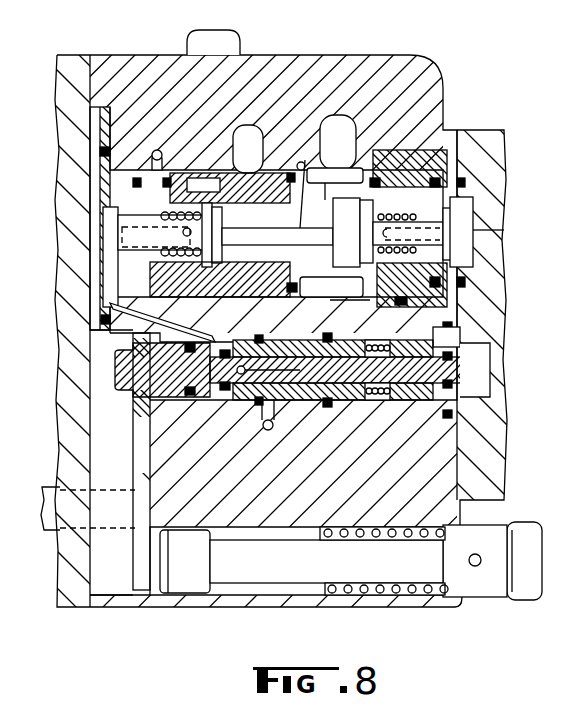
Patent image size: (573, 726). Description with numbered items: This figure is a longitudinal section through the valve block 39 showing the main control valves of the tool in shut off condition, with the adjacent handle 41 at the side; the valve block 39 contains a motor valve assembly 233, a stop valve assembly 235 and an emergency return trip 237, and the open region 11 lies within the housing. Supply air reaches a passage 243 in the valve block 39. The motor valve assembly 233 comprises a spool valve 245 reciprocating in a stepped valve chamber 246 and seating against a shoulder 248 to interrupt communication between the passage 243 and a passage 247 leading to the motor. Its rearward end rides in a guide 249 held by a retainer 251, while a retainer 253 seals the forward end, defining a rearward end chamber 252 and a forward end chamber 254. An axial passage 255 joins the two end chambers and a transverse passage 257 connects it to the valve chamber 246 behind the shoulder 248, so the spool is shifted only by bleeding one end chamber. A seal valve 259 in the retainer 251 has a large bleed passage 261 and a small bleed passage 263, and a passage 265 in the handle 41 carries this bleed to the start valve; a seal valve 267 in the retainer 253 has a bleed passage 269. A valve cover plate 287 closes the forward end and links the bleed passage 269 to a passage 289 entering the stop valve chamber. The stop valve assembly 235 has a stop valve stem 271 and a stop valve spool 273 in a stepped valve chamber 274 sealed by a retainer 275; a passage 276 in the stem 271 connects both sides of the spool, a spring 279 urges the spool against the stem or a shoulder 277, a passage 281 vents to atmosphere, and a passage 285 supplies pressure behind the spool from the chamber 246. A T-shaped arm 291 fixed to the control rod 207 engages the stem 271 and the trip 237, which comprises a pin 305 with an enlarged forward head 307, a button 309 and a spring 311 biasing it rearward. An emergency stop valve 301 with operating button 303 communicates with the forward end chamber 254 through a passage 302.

The cavity 11 is at (86, 350).
The valve block 39 is at (288, 55).
The handle 41 is at (508, 430).
The control rod 207 is at (55, 500).
The motor valve assembly 233 is at (470, 170).
The stop valve assembly 235 is at (488, 372).
The emergency return trip 237 is at (556, 516).
The passage 243 is at (335, 125).
The spool valve 245 is at (200, 168).
The valve chamber 246 is at (328, 170).
The passage 247 is at (248, 140).
The shoulder 248 is at (297, 163).
The guide 249 is at (428, 165).
The retainer 251 is at (462, 182).
The rearward end chamber 252 is at (345, 165).
The retainer 253 is at (118, 185).
The forward end chamber 254 is at (245, 285).
The axial passage 255 is at (235, 242).
The transverse passage 257 is at (292, 205).
The seal valve 259 is at (470, 200).
The bleed passage 261 is at (470, 240).
The bleed passage 263 is at (330, 238).
The passage 265 is at (505, 230).
The seal valve 267 is at (105, 228).
The bleed passage 269 is at (115, 262).
The stop valve stem 271 is at (172, 395).
The stop valve spool 273 is at (328, 405).
The valve chamber 274 is at (232, 400).
The retainer 275 is at (455, 325).
The passage 276 is at (248, 370).
The shoulder 277 is at (250, 335).
The spring 279 is at (378, 402).
The passage 281 is at (266, 430).
The passage 285 is at (368, 305).
The valve cover plate 287 is at (102, 318).
The passage 289 is at (178, 297).
The T-shaped arm 291 is at (145, 450).
The emergency stop valve 301 is at (185, 45).
The passage 302 is at (157, 150).
The operating button 303 is at (210, 38).
The pin 305 is at (290, 585).
The forward head 307 is at (190, 597).
The button 309 is at (512, 600).
The spring 311 is at (380, 592).